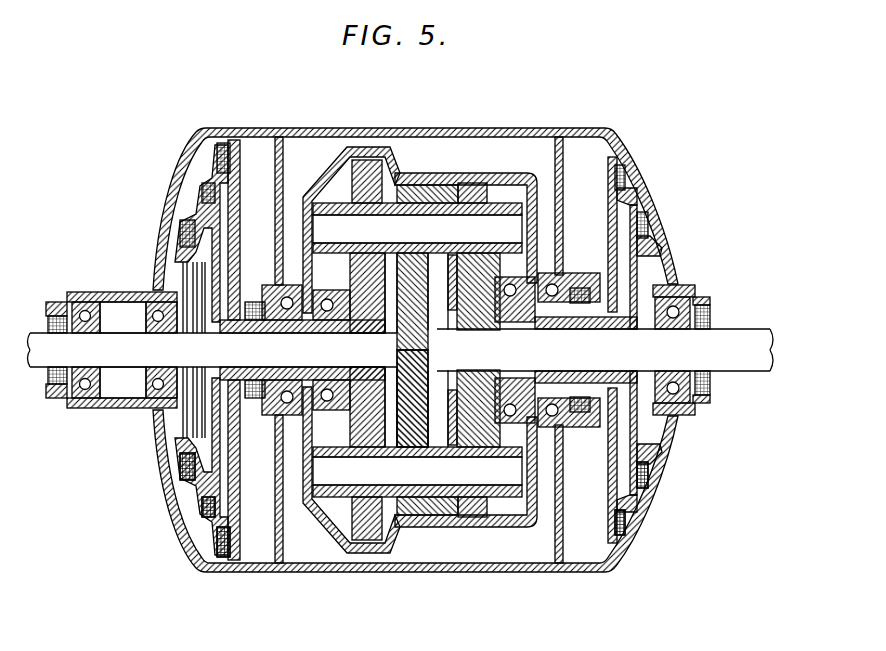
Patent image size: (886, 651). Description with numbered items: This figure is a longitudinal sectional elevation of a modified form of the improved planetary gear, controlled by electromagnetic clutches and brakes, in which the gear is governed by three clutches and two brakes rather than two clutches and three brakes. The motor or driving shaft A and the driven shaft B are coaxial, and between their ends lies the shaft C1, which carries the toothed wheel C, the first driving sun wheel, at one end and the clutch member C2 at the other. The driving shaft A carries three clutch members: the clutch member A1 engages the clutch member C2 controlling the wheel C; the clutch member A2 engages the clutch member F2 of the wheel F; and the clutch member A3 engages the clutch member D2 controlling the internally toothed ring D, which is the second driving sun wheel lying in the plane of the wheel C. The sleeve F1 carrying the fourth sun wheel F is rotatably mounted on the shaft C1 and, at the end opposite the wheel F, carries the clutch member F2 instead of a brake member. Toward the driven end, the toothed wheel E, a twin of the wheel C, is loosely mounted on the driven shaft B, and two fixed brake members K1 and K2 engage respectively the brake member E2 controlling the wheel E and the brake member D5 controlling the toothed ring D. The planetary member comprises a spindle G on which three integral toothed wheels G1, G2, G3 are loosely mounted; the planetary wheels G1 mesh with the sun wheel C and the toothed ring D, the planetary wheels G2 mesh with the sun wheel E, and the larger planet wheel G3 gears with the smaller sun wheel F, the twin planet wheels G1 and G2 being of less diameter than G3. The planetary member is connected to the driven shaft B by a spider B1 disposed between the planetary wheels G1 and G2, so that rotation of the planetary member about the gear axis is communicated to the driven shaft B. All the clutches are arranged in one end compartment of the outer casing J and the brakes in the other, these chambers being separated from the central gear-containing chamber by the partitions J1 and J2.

The driving shaft A is at (111, 350).
The clutch member A1 is at (186, 470).
The clutch member A2 is at (206, 509).
The clutch member A3 is at (220, 548).
The driven shaft B is at (738, 337).
The spider B1 is at (442, 442).
The toothed wheel C is at (422, 320).
The shaft C1 is at (213, 350).
The clutch member C2 is at (200, 420).
The internally toothed ring D is at (412, 173).
The clutch member D2 is at (232, 193).
The brake member D5 is at (617, 212).
The toothed wheel E is at (497, 432).
The brake member E2 is at (632, 264).
The sun wheel F is at (323, 420).
The sleeve F1 is at (240, 314).
The clutch member F2 is at (218, 222).
The spindle G is at (343, 240).
The planetary wheel G1 is at (424, 196).
The planetary wheel G2 is at (473, 192).
The planetary wheel G3 is at (367, 170).
The outer casing J is at (325, 565).
The partition J1 is at (278, 551).
The partition J2 is at (558, 547).
The fixed brake member K1 is at (656, 483).
The fixed brake member K2 is at (624, 518).